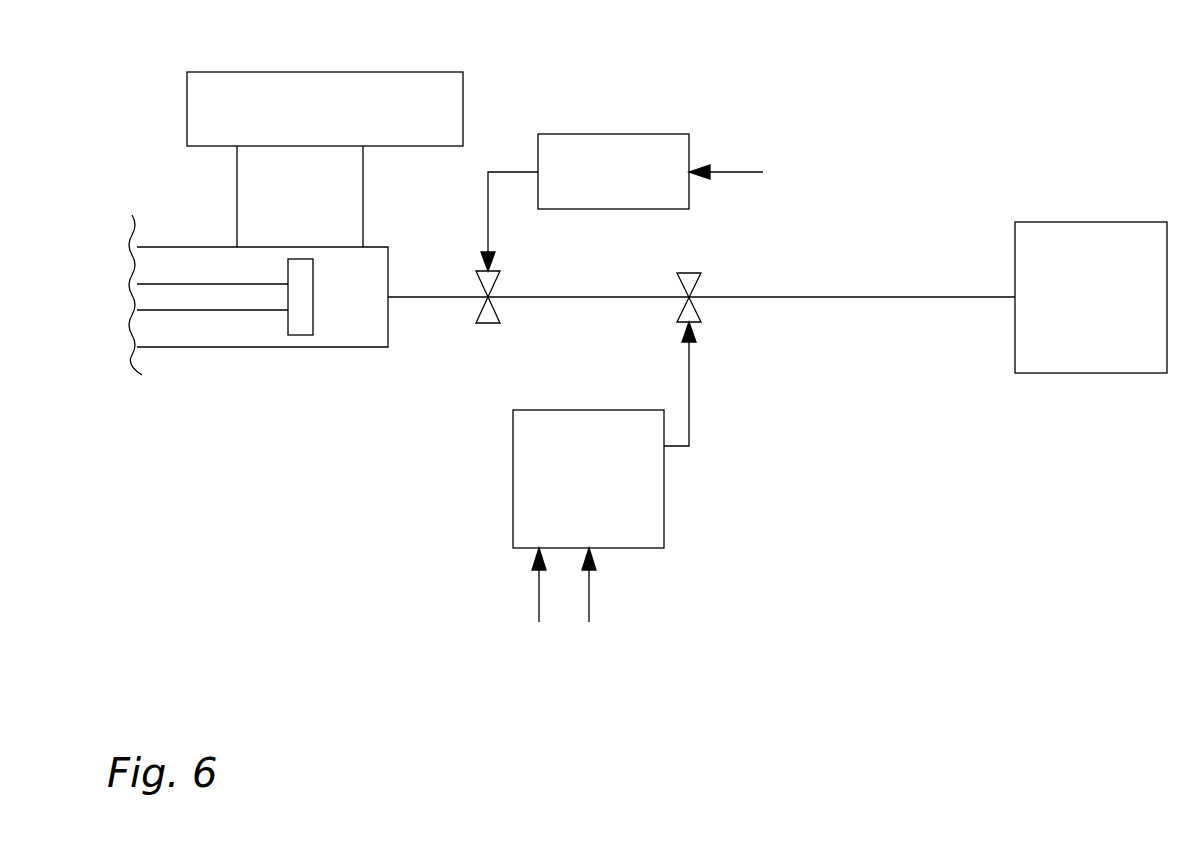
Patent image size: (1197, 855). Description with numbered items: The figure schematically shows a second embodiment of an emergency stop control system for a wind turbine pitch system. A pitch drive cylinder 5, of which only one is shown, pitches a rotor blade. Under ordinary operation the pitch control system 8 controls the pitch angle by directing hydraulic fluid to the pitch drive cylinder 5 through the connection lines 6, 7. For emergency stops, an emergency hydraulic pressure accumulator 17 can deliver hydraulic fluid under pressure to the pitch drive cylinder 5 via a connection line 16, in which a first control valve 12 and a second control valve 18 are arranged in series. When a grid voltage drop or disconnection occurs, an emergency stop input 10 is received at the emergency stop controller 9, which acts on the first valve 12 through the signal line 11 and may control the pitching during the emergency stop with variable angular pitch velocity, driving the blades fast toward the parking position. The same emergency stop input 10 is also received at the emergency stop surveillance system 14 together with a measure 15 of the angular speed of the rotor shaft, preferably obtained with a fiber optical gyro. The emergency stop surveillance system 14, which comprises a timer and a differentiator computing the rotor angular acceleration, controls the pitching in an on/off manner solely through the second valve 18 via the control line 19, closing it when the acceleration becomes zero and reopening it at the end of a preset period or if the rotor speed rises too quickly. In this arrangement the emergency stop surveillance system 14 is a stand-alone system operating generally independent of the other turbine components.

The pitch drive cylinder 5 is at (237, 335).
The connection line 6 is at (237, 220).
The connection line 7 is at (363, 222).
The pitch control system 8 is at (363, 83).
The emergency stop controller 9 is at (638, 146).
The emergency stop input 10 is at (763, 172).
The supply line 11 is at (488, 233).
The first control valve 12 is at (500, 273).
The emergency stop surveillance system 14 is at (653, 522).
The measure of the angular speed of the rotor shaft 15 is at (589, 600).
The connection line 16 is at (815, 297).
The emergency hydraulic pressure accumulator 17 is at (1090, 235).
The second control valve 18 is at (698, 273).
The feed line 19 is at (689, 422).